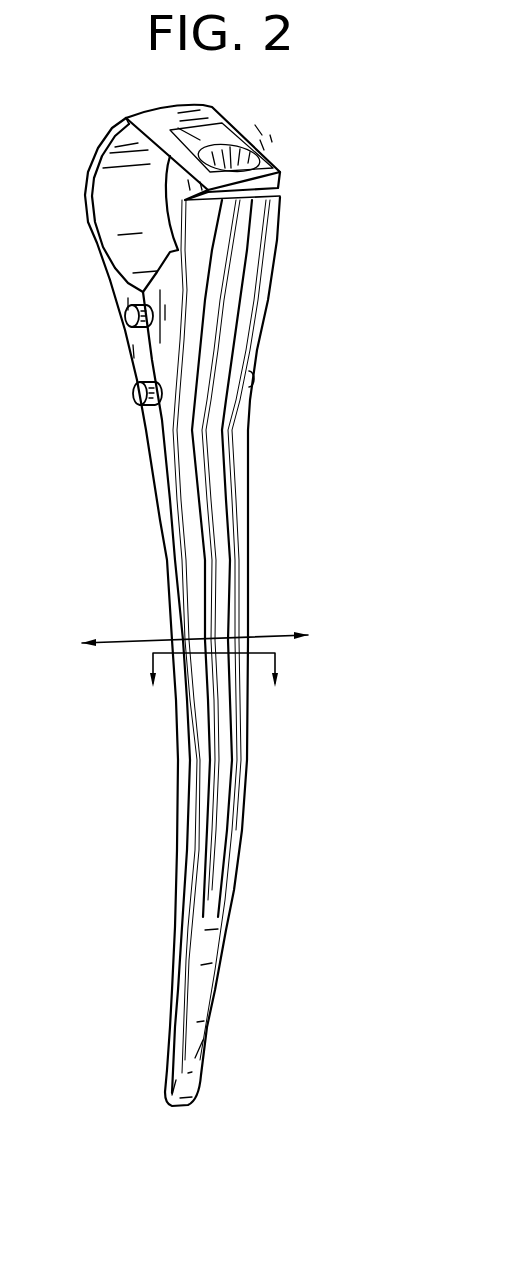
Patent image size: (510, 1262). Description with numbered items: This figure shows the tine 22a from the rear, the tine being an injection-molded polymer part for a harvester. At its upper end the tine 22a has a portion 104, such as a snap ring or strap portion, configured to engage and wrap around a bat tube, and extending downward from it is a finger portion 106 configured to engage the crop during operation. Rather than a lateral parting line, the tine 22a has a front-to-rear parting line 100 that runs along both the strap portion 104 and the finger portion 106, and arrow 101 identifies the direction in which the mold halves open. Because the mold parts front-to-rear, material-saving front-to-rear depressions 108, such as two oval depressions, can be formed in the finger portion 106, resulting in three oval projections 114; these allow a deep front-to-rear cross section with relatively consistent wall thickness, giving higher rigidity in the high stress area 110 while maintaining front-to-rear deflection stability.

The tine 22a is at (294, 331).
The snap ring or strap portion 104 is at (127, 190).
The high stress area 110 is at (139, 426).
The front-to-rear parting line 100 is at (177, 558).
The front-to-rear depressions 108 is at (196, 472).
The projections 114 is at (203, 598).
The finger portion 106 is at (247, 712).
The mold opening direction 101 is at (127, 645).